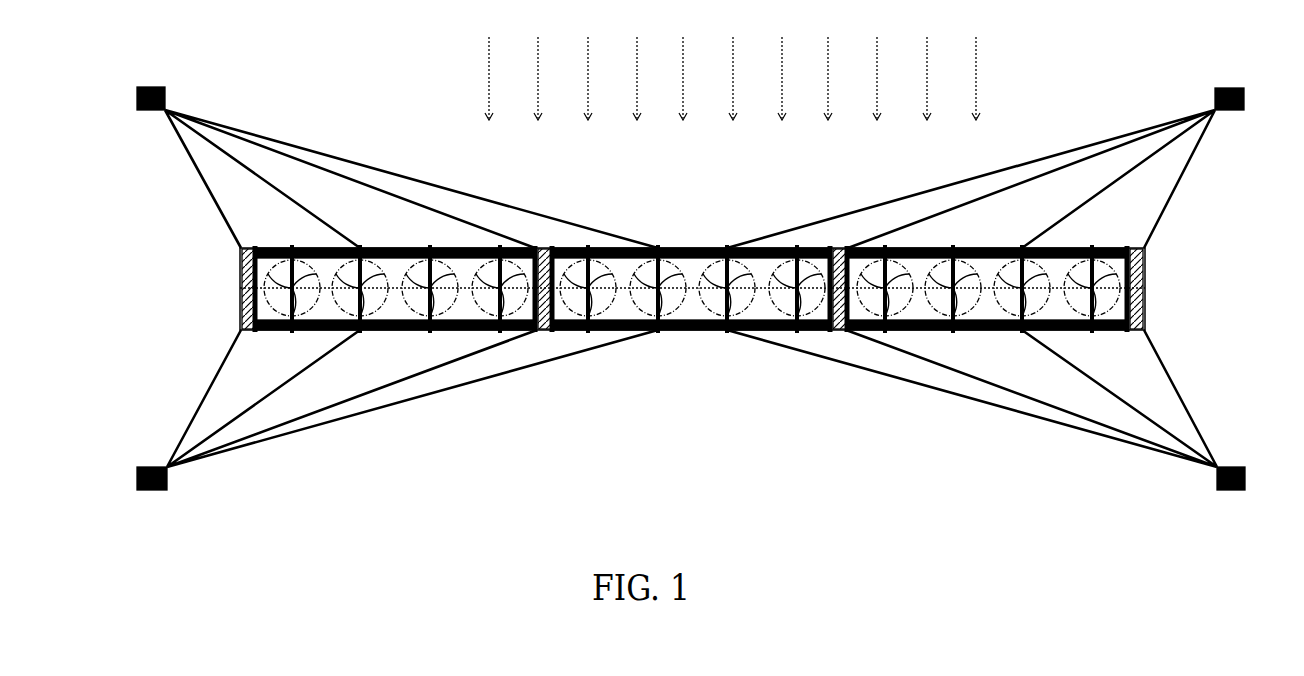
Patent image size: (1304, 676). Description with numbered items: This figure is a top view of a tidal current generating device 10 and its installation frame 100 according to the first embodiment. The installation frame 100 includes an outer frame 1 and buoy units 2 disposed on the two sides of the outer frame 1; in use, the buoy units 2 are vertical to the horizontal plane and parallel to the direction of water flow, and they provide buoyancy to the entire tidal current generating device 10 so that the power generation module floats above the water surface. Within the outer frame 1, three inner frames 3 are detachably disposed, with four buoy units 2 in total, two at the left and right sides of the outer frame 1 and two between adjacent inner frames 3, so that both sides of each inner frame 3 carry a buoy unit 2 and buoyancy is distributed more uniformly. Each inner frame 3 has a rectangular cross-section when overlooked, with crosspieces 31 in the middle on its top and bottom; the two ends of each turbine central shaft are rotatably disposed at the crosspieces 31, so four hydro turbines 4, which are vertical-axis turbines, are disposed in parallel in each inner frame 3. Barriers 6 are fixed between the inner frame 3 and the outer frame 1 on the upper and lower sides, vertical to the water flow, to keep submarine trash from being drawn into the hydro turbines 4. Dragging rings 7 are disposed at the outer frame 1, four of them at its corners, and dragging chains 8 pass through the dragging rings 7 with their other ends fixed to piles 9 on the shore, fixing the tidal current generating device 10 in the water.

The outer frame 1 is at (715, 290).
The buoy unit 2 is at (1145, 283).
The inner frame 3 is at (250, 262).
The hydro turbine 4 is at (255, 295).
The barrier 6 is at (272, 247).
The dragging ring 7 is at (240, 248).
The dragging chain 8 is at (212, 143).
The pile 9 is at (137, 98).
The tidal current generating device 10 is at (1048, 131).
The crosspiece 31 is at (278, 330).
The installation frame of the tidal current generating device 100 is at (1151, 250).